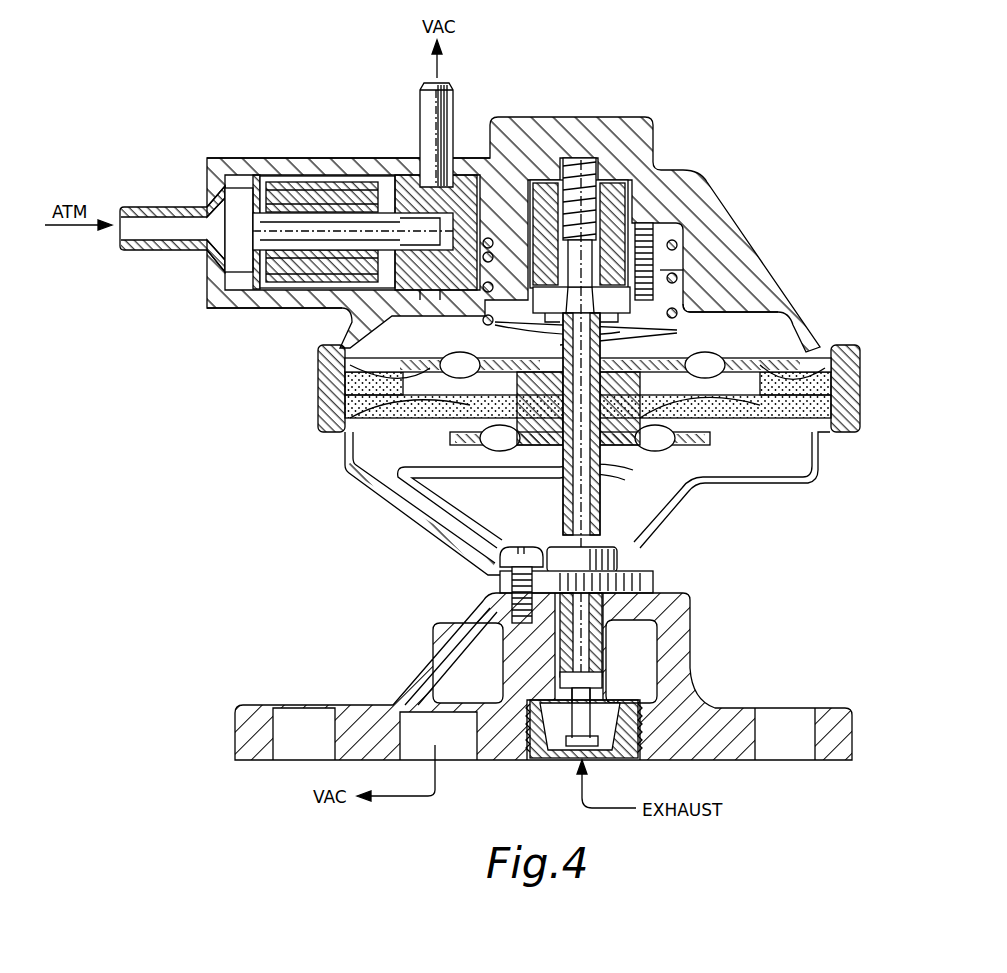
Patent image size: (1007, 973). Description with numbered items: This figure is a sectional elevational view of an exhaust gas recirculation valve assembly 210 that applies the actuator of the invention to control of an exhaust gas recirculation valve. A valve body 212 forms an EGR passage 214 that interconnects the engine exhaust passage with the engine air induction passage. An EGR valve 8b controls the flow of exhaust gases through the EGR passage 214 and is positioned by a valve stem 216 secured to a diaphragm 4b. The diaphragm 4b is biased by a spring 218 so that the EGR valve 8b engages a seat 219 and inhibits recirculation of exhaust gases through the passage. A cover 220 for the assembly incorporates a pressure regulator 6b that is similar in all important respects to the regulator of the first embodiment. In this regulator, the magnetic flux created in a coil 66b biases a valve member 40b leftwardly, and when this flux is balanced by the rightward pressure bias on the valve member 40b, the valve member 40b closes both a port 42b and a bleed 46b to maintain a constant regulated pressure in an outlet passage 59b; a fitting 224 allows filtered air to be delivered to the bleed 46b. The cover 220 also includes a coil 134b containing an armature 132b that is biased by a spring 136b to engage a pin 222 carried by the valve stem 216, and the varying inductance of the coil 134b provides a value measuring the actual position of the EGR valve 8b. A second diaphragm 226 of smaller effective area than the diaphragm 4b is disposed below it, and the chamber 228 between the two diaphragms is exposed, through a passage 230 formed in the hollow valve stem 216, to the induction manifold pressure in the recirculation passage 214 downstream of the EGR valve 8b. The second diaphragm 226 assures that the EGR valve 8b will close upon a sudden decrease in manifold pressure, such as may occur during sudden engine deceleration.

The fitting 224 is at (168, 206).
The pressure regulator 6b is at (327, 202).
The coil 66b is at (330, 192).
The port 42b is at (443, 190).
The valve member 40b is at (291, 285).
The bleed 46b is at (416, 300).
The outlet passage 59b is at (432, 300).
The spring 136b is at (580, 178).
The armature 132b is at (598, 205).
The coil 134b is at (614, 226).
The exhaust gas recirculation valve assembly 210 is at (712, 183).
The spring 218 is at (740, 233).
The cover 220 is at (752, 290).
The diaphragm 4b is at (780, 368).
The chamber 228 is at (845, 386).
The pin 222 is at (607, 332).
The passage 230 is at (590, 476).
The valve stem 216 is at (598, 507).
The second diaphragm 226 is at (745, 402).
The EGR passage 214 is at (465, 676).
The valve body 212 is at (688, 668).
The seat 219 is at (610, 698).
The EGR valve 8b is at (602, 732).